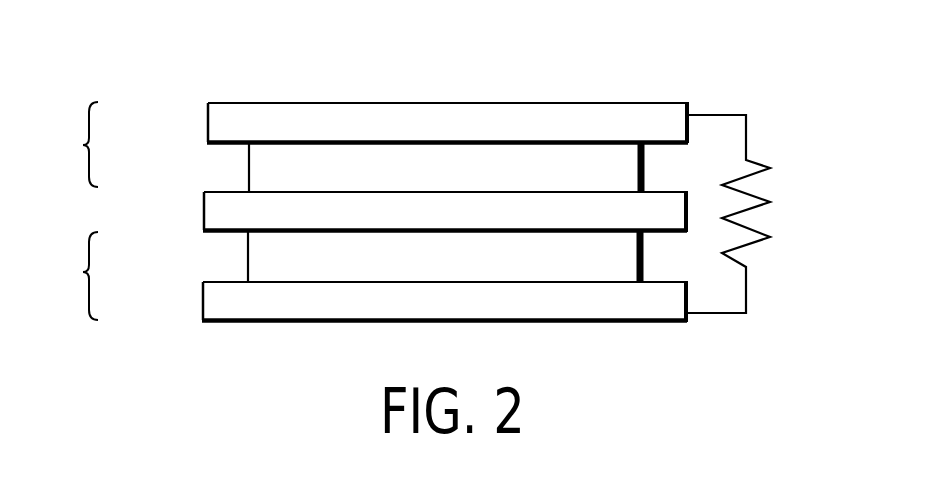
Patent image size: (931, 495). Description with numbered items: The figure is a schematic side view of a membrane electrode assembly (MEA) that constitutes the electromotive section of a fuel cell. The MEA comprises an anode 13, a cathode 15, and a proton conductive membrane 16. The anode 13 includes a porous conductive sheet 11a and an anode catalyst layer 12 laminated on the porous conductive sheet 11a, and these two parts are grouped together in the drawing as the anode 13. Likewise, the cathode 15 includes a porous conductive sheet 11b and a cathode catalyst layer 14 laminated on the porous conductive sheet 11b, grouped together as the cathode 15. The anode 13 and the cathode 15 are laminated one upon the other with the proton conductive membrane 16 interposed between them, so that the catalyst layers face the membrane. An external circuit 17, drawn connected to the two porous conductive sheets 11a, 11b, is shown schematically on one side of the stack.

The porous conductive sheet 11a is at (217, 120).
The porous conductive sheet 11b is at (216, 297).
The anode catalyst layer 12 is at (256, 166).
The anode 13 is at (72, 144).
The cathode catalyst layer 14 is at (255, 250).
The cathode 15 is at (71, 276).
The proton conductive membrane 16 is at (597, 208).
The external circuit 17 is at (748, 134).